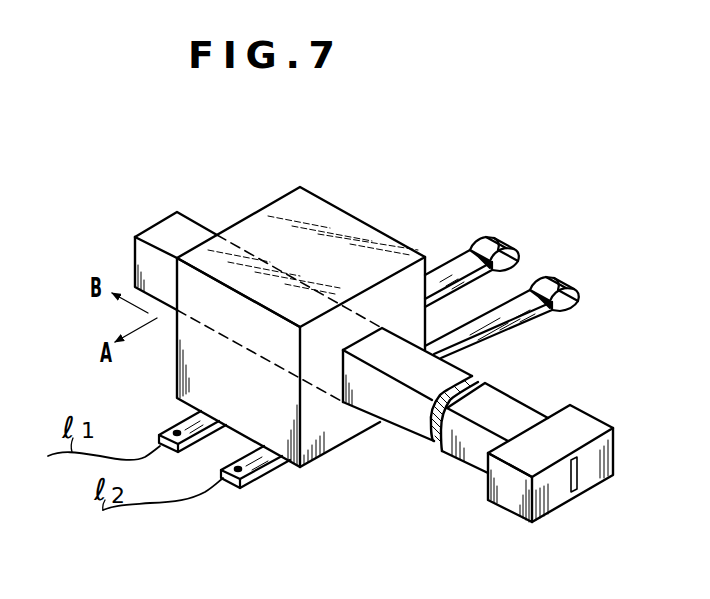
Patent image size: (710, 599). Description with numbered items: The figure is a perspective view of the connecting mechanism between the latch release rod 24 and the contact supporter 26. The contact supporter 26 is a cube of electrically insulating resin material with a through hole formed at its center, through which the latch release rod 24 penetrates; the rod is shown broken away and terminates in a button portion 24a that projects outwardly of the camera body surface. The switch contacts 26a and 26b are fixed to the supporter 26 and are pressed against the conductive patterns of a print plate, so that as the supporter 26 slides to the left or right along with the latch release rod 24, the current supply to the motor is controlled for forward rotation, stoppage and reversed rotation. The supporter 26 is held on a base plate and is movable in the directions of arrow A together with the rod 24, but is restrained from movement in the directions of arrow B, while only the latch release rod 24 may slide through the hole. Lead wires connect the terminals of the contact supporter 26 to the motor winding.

The contact supporter 26 is at (309, 206).
The latch release rod 24 is at (418, 423).
The button portion 24a is at (582, 422).
The switch contact 26a is at (527, 307).
The switch contact 26b is at (465, 258).